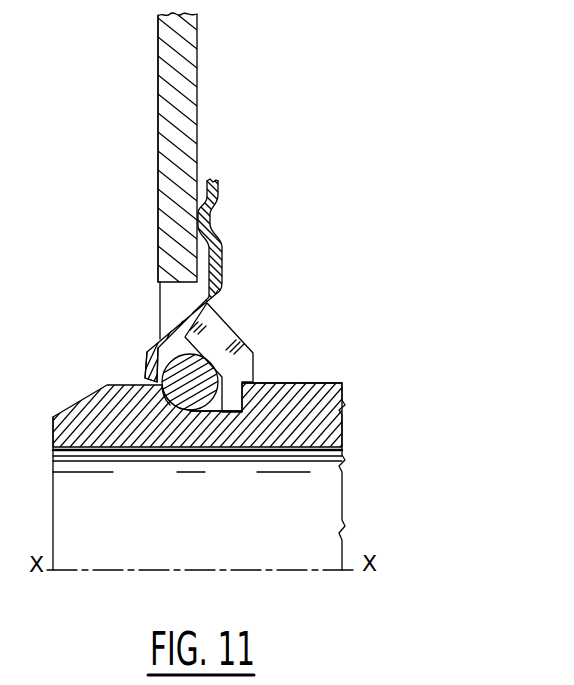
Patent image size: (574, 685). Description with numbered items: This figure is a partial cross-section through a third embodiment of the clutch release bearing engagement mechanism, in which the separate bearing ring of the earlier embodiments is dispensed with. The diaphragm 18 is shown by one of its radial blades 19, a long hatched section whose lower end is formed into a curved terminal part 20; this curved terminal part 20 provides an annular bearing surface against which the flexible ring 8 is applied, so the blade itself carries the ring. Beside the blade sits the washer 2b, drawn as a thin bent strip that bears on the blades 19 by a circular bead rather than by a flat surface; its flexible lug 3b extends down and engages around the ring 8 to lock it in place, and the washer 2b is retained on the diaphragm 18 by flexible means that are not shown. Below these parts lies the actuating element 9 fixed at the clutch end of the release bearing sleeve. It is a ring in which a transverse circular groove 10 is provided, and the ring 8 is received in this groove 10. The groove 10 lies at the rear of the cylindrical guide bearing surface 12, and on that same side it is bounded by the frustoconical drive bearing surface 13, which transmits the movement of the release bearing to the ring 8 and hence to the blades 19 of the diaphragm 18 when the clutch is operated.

The radial blades 19 is at (188, 107).
The diaphragm 18 is at (150, 180).
The washer 2b is at (231, 235).
The curved terminal parts 20 is at (209, 302).
The flexible lug 3b is at (153, 332).
The flexible ring 8 is at (178, 370).
The cylindrical guide bearing surface 12 is at (122, 385).
The actuating element 9 is at (301, 372).
The frustoconical drive bearing surface 13 is at (157, 400).
The circular groove 10 is at (209, 424).